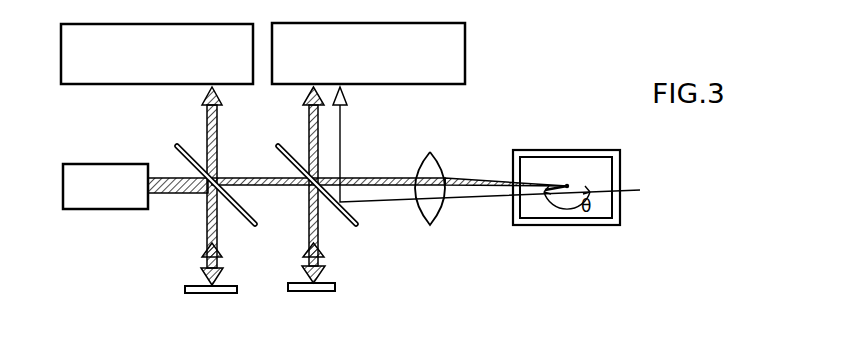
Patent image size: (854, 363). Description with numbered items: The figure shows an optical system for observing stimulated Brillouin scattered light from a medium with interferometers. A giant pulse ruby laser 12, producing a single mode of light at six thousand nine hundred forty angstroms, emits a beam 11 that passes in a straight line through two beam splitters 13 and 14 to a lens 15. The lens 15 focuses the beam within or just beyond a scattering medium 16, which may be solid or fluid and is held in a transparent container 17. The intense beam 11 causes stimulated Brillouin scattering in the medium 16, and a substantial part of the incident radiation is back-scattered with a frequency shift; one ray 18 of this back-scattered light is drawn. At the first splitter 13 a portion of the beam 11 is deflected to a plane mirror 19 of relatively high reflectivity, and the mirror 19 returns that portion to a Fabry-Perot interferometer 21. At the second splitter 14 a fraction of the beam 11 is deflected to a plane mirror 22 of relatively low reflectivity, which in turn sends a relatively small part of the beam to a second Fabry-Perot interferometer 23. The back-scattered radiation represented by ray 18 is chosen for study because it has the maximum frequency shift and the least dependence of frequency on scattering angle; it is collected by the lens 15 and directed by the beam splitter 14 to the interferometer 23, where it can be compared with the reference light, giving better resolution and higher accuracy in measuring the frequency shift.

The beam 11 is at (184, 199).
The giant pulse ruby laser 12 is at (87, 164).
The beam splitter 13 is at (255, 225).
The beam splitter 14 is at (356, 225).
The lens 15 is at (433, 157).
The scattering medium 16 is at (588, 167).
The transparent container 17 is at (557, 150).
The ray 18 is at (451, 203).
The plane mirror 19 is at (190, 296).
The Fabry-Perot interferometer 21 is at (61, 47).
The plane mirror 22 is at (336, 288).
The Fabry-Perot interferometer 23 is at (466, 53).